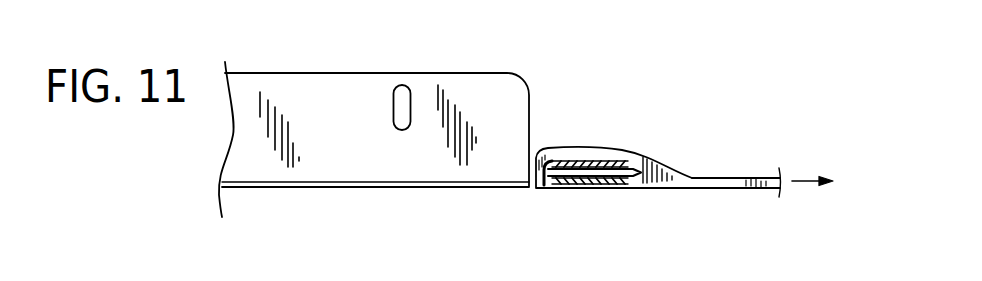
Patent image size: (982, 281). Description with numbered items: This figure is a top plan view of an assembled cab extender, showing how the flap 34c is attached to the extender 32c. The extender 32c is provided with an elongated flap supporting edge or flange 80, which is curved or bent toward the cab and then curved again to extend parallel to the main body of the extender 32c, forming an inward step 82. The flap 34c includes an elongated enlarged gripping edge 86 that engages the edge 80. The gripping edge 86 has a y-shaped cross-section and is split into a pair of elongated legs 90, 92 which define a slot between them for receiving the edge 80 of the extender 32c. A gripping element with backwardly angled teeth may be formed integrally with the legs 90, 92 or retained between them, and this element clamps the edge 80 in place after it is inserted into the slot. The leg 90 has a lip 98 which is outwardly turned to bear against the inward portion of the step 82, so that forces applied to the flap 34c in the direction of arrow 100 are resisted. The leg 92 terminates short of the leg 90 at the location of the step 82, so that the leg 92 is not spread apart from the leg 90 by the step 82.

The extender 32c is at (472, 100).
The gripping edge 86 is at (572, 137).
The leg 90 is at (608, 152).
The flap supporting edge 80 is at (637, 170).
The inward step 82 is at (550, 188).
The lip 98 is at (537, 187).
The leg 92 is at (607, 189).
The flap 34c is at (723, 172).
The arrow 100 is at (803, 184).